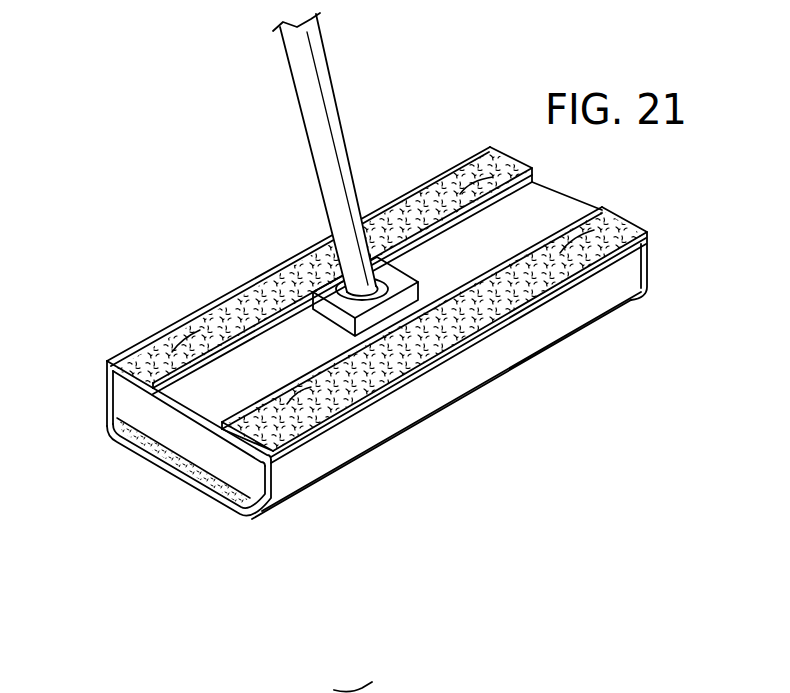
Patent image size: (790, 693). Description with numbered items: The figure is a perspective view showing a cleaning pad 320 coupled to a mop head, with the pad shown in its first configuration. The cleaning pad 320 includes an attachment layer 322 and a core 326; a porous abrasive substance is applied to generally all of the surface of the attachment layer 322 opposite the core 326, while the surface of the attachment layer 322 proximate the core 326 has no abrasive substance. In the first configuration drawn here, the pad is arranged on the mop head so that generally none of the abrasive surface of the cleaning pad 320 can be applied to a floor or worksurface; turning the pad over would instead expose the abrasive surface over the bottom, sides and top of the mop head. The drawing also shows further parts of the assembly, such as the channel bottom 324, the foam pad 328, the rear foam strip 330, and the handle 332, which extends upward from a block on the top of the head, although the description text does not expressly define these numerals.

The cleaning pad 320 is at (622, 228).
The attachment layer 322 is at (447, 373).
The channel bottom 324 is at (265, 477).
The core 326 is at (116, 440).
The foam pad in channel 328 is at (158, 468).
The rear foam strip 330 is at (250, 366).
The handle 332 is at (308, 64).